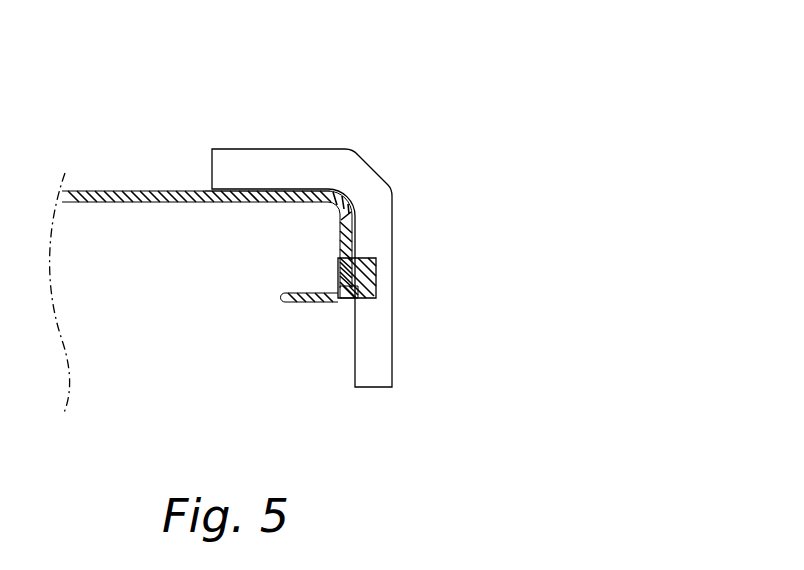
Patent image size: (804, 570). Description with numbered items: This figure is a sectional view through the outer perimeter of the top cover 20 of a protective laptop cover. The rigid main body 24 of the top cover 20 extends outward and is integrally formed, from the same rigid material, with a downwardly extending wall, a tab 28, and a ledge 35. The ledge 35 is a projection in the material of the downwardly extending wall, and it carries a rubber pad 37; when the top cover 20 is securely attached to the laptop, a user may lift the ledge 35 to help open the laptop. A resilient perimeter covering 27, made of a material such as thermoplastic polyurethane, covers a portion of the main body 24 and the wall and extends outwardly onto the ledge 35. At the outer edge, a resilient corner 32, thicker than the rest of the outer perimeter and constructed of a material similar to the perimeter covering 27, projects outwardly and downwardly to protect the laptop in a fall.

The top cover 20 is at (176, 86).
The main body 24 is at (125, 191).
The perimeter covering 27 is at (212, 190).
The tabs 28 is at (282, 302).
The corners 32 is at (378, 176).
The ledge 35 is at (376, 274).
The rubber pad 37 is at (352, 300).